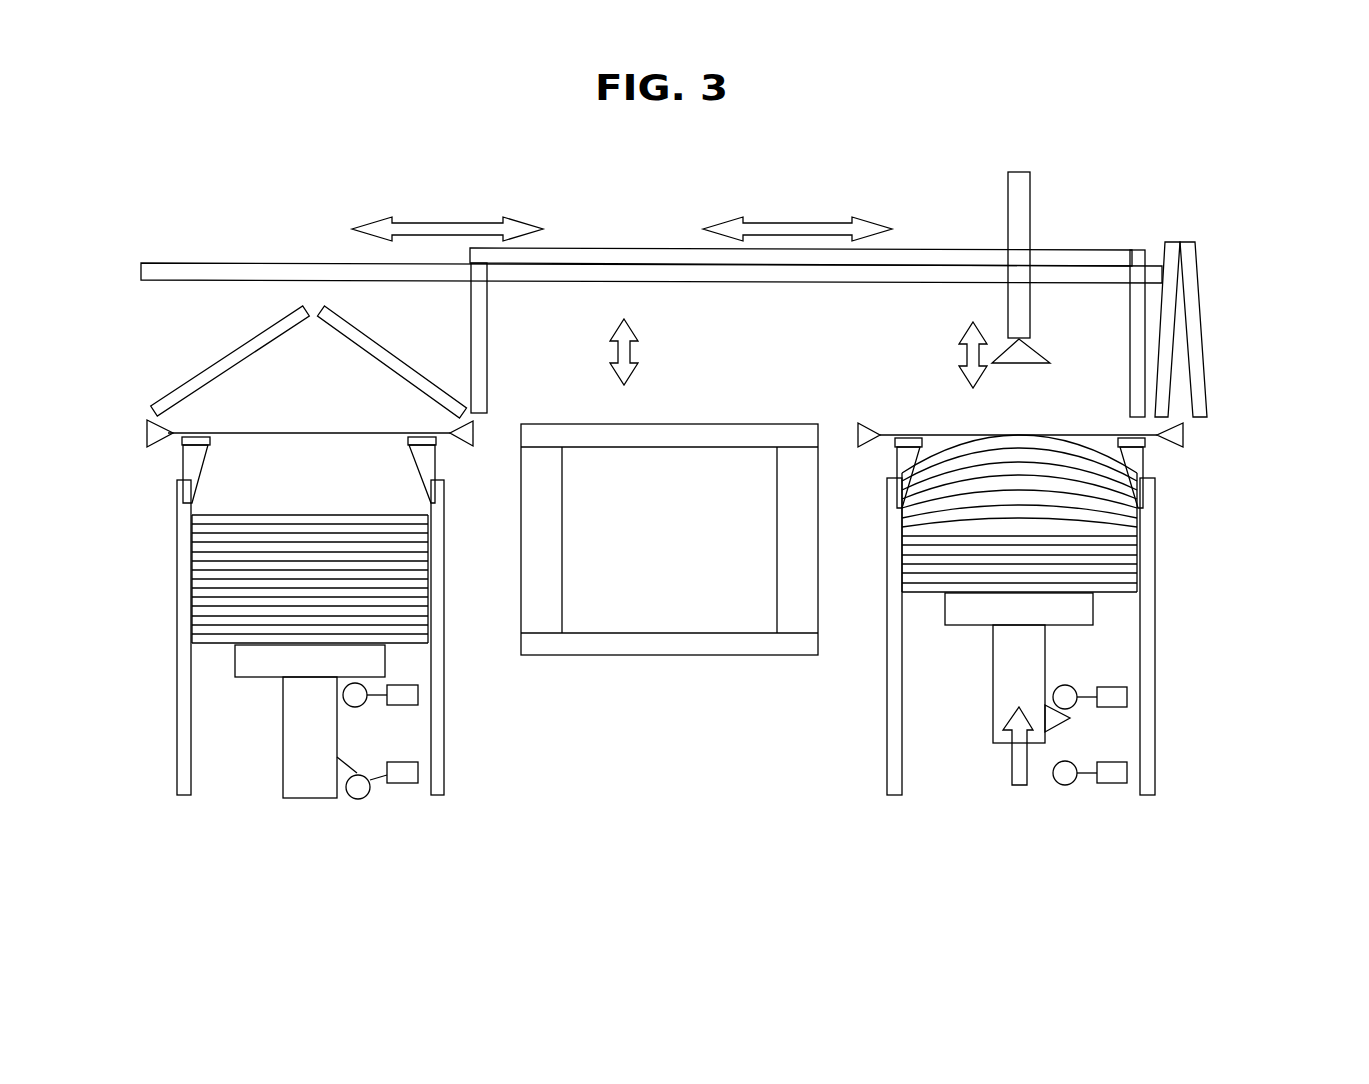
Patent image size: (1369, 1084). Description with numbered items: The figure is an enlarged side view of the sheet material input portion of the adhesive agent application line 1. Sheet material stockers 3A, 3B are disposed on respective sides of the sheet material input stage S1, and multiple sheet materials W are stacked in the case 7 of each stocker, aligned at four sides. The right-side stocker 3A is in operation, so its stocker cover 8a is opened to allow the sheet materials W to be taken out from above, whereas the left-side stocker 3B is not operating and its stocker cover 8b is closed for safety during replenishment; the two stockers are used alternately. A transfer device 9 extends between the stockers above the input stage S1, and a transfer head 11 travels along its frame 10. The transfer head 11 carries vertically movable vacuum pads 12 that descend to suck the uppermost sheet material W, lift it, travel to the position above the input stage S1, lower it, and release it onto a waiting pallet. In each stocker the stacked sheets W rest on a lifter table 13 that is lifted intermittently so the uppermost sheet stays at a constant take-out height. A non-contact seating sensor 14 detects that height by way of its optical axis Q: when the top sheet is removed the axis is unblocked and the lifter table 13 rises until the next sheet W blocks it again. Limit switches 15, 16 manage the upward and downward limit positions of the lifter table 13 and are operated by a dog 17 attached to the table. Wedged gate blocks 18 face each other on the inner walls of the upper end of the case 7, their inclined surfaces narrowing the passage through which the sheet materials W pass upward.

The adhesive agent application line 1 is at (637, 664).
The sheet material stocker 3A is at (880, 722).
The sheet material stocker 3B is at (172, 730).
The case 7 is at (177, 598).
The stocker cover 8a is at (1192, 300).
The stocker cover 8b is at (187, 388).
The transfer device 9 is at (642, 263).
The frame 10 is at (573, 272).
The transfer head 11 is at (1023, 192).
The vacuum pad 12 is at (1027, 357).
The lifter table 13 is at (262, 668).
The non-contact seating sensor 14 is at (145, 433).
The limit switch 15 is at (407, 705).
The limit switch 16 is at (400, 775).
The dog 17 is at (342, 775).
The wedged gate block 18 is at (178, 455).
The optical axis Q is at (266, 433).
The sheet material W is at (288, 513).
The sheet material input stage S1 is at (725, 424).